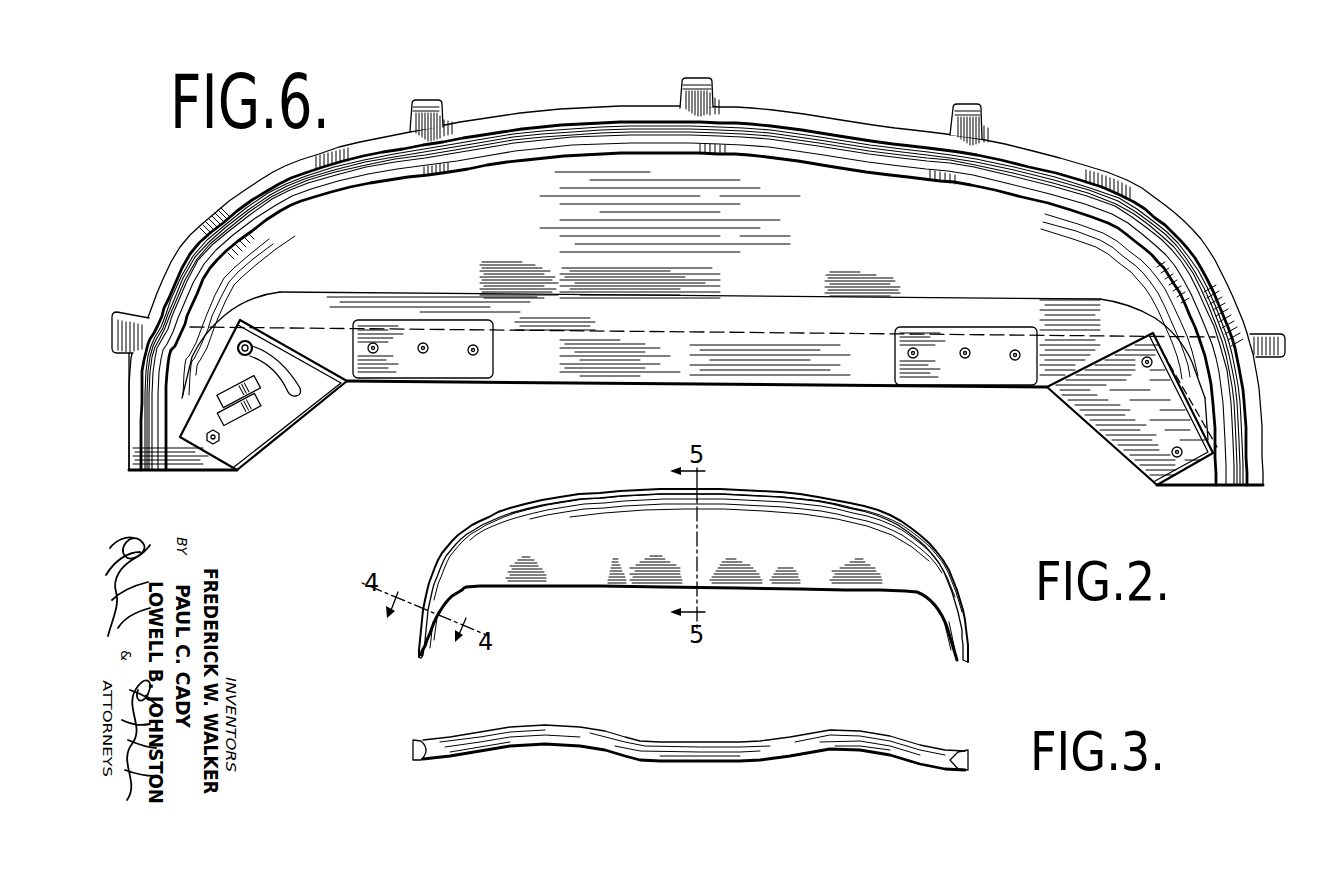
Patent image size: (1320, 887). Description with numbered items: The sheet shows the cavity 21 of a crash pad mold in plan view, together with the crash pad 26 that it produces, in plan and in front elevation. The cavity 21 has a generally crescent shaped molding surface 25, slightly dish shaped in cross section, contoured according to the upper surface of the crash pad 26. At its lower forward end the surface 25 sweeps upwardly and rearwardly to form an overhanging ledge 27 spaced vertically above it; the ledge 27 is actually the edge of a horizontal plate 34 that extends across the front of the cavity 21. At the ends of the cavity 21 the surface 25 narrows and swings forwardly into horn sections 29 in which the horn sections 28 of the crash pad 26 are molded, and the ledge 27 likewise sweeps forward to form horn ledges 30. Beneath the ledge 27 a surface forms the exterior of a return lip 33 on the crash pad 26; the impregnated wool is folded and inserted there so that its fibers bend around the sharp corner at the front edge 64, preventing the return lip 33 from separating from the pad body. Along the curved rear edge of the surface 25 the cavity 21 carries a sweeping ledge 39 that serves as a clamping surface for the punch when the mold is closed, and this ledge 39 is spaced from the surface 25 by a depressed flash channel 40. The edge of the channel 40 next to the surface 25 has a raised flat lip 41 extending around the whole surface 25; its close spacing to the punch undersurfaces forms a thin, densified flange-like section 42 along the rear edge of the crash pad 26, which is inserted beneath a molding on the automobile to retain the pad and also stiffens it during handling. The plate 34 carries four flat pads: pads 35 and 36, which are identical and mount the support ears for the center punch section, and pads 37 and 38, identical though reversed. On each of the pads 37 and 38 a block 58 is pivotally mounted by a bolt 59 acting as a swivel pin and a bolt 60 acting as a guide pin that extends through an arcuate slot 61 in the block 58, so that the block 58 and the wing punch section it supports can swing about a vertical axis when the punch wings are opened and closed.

In FIG. 6, the cavity 21 is at (1097, 170).
In FIG. 6, the molding surface 25 is at (1010, 213).
In FIG. 2, the crash pad 26 is at (908, 525).
In FIG. 6, the overhanging ledge 27 is at (920, 298).
In FIG. 2, the horn sections 28 is at (415, 635).
In FIG. 3, the horn sections 28 is at (412, 742).
In FIG. 6, the horn sections of the cavity 29 is at (130, 447).
In FIG. 6, the horn ledges 30 is at (1262, 376).
In FIG. 3, the return lip 33 is at (926, 767).
In FIG. 6, the horizontal plate 34 is at (630, 380).
In FIG. 6, the flat pad 35 is at (943, 372).
In FIG. 6, the flat pad 36 is at (446, 370).
In FIG. 6, the flat pad 37 is at (1112, 432).
In FIG. 6, the flat pad 38 is at (334, 381).
In FIG. 6, the sweeping ledge 39 is at (217, 210).
In FIG. 6, the flash channel 40 is at (180, 247).
In FIG. 6, the raised flat lip 41 is at (557, 157).
In FIG. 2, the flange-like section 42 is at (557, 500).
In FIG. 6, the block 58 is at (288, 413).
In FIG. 6, the bolt serving as swivel pin 59 is at (222, 470).
In FIG. 6, the bolt serving as guide pin 60 is at (244, 343).
In FIG. 6, the arcuate slot 61 is at (282, 367).
In FIG. 2, the front edge 64 is at (814, 593).
In FIG. 3, the front edge 64 is at (583, 738).